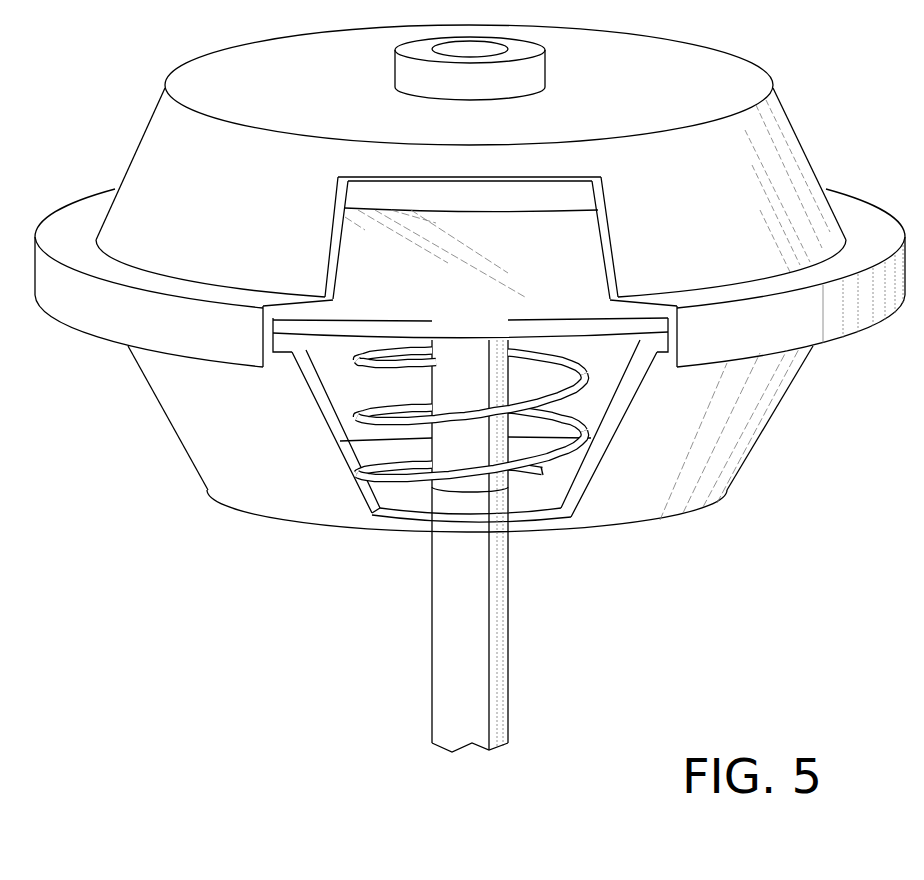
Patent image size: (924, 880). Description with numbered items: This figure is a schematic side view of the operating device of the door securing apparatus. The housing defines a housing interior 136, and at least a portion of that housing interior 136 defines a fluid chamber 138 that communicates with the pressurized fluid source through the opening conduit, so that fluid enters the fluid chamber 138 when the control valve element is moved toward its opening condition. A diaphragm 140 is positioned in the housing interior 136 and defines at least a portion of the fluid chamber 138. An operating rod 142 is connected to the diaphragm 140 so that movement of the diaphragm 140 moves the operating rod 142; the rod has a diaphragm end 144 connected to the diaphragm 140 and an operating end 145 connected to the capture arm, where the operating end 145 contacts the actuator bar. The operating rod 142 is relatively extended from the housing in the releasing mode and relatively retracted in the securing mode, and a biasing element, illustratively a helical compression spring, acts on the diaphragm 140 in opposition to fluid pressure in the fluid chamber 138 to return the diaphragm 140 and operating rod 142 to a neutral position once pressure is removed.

The housing interior 136 is at (326, 366).
The fluid chamber 138 is at (560, 200).
The diaphragm 140 is at (556, 278).
The operating rod 142 is at (498, 613).
The diaphragm end 144 is at (475, 345).
The operating end 145 is at (480, 742).